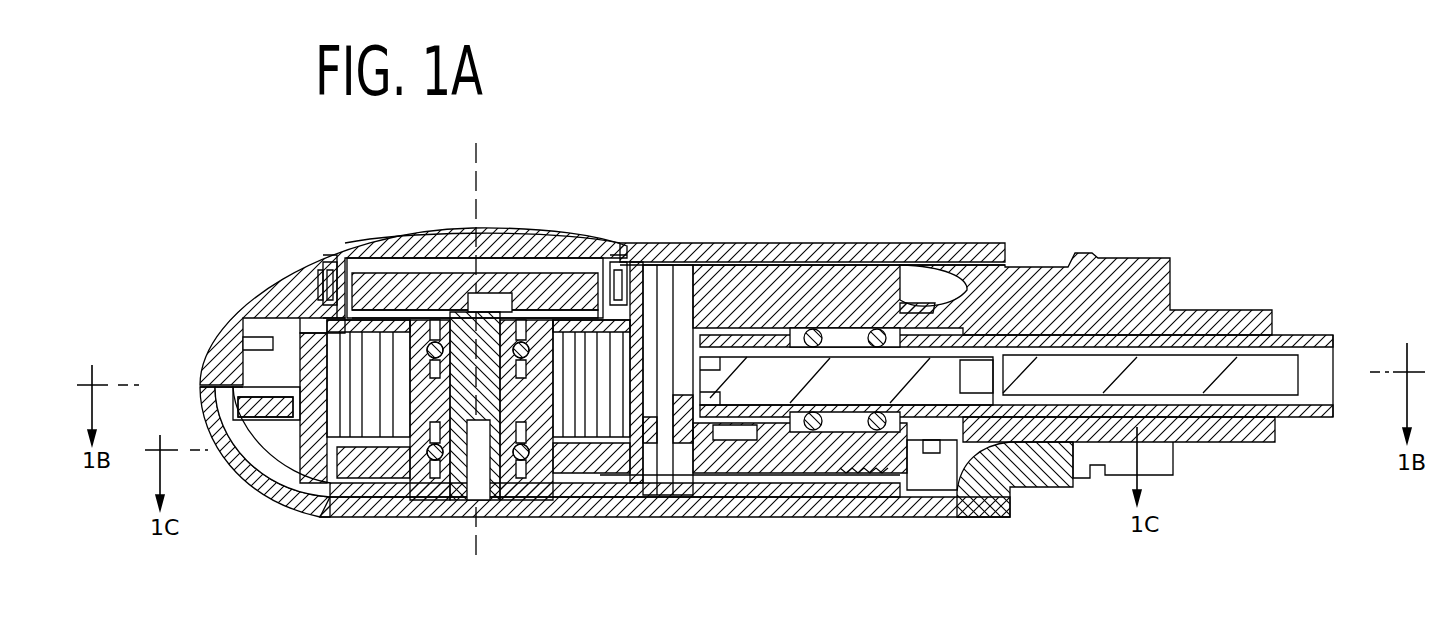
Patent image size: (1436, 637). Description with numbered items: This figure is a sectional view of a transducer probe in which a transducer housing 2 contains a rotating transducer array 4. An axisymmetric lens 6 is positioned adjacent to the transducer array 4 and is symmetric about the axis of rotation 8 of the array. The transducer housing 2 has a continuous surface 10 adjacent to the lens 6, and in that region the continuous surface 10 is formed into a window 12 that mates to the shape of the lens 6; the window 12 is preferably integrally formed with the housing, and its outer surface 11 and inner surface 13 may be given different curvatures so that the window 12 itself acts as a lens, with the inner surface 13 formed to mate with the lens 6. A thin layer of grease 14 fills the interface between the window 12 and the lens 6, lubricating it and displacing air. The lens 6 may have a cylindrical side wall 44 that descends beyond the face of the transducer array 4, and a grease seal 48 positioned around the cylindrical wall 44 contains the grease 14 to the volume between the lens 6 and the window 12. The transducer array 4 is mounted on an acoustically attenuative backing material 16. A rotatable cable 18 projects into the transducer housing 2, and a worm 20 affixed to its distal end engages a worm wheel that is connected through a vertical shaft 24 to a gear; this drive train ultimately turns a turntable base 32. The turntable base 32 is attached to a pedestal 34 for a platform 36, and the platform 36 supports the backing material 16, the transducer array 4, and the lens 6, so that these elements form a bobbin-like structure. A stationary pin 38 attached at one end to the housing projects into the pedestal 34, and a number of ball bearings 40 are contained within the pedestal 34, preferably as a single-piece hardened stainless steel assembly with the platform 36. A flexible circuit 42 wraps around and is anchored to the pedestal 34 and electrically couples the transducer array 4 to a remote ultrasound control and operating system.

The transducer housing 2 is at (777, 237).
The transducer array 4 is at (415, 267).
The axisymmetric lens 6 is at (553, 235).
The axis of rotation 8 is at (478, 563).
The continuous surface 10 is at (327, 240).
The outer surface 11 is at (450, 232).
The window 12 is at (415, 237).
The inner surface 13 is at (465, 272).
The grease 14 is at (527, 230).
The backing material 16 is at (485, 300).
The rotatable cable 18 is at (963, 382).
The worm 20 is at (710, 392).
The vertical shaft 24 is at (733, 457).
The turntable base 32 is at (557, 460).
The pedestal 34 is at (405, 350).
The platform 36 is at (340, 323).
The stationary pin 38 is at (455, 485).
The ball bearings 40 is at (427, 458).
The flexible circuit 42 is at (347, 413).
The cylindrical side wall 44 is at (340, 277).
The grease seal 48 is at (330, 287).